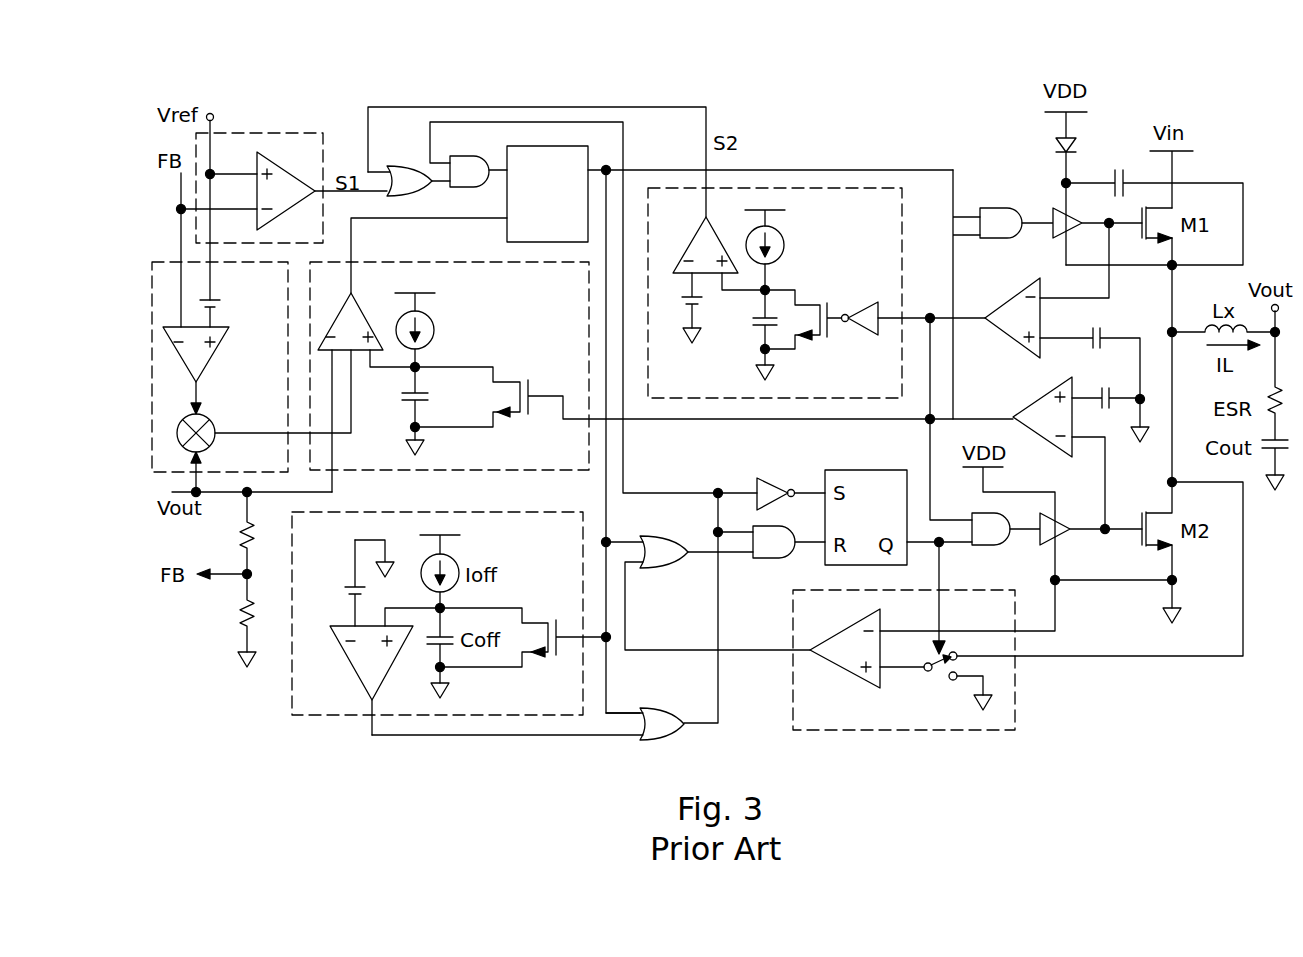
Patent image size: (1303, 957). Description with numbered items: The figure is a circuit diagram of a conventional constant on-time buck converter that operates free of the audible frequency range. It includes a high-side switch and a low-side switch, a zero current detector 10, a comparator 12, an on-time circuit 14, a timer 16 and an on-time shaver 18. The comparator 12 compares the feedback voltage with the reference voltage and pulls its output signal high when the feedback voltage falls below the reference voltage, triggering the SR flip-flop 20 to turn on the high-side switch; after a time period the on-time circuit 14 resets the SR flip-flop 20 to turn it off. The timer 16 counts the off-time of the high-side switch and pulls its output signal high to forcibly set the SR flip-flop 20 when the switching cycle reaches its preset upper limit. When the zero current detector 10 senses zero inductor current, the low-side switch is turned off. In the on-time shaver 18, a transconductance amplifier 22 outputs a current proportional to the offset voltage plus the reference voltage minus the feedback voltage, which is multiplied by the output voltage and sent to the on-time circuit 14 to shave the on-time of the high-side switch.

The zero current detector 10 is at (1015, 698).
The comparator 12 is at (260, 133).
The on-time circuit 14 is at (590, 447).
The timer 16 is at (768, 188).
The on-time shaver 18 is at (163, 262).
The SR flip-flop 20 is at (540, 242).
The transconductance amplifier 22 is at (213, 355).